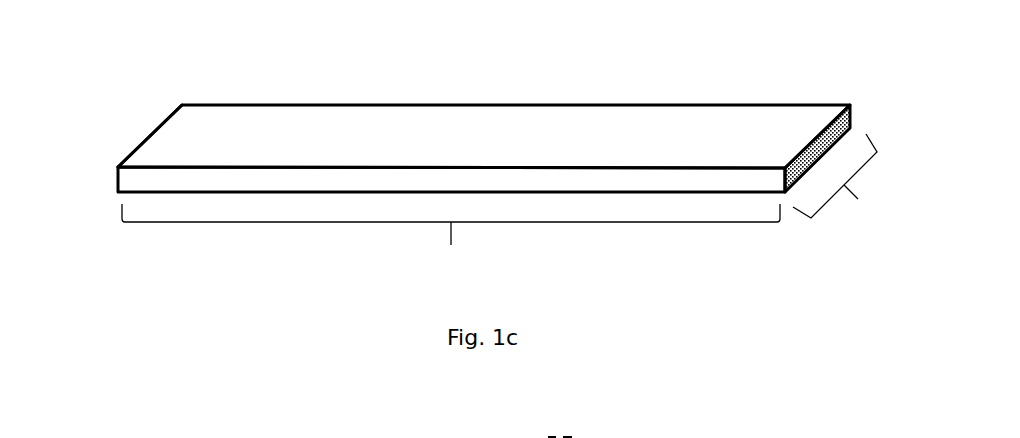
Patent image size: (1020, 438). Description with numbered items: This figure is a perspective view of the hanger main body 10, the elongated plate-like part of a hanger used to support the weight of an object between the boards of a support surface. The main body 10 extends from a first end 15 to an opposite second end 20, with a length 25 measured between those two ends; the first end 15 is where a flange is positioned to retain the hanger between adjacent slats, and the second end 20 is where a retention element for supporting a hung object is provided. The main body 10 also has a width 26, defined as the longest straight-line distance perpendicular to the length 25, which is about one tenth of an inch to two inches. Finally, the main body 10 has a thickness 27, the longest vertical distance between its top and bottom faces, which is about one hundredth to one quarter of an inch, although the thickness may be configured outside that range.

The main body 10 is at (505, 128).
The first end 15 is at (150, 135).
The second end 20 is at (812, 137).
The length 25 is at (451, 244).
The width 26 is at (841, 188).
The thickness 27 is at (103, 167).